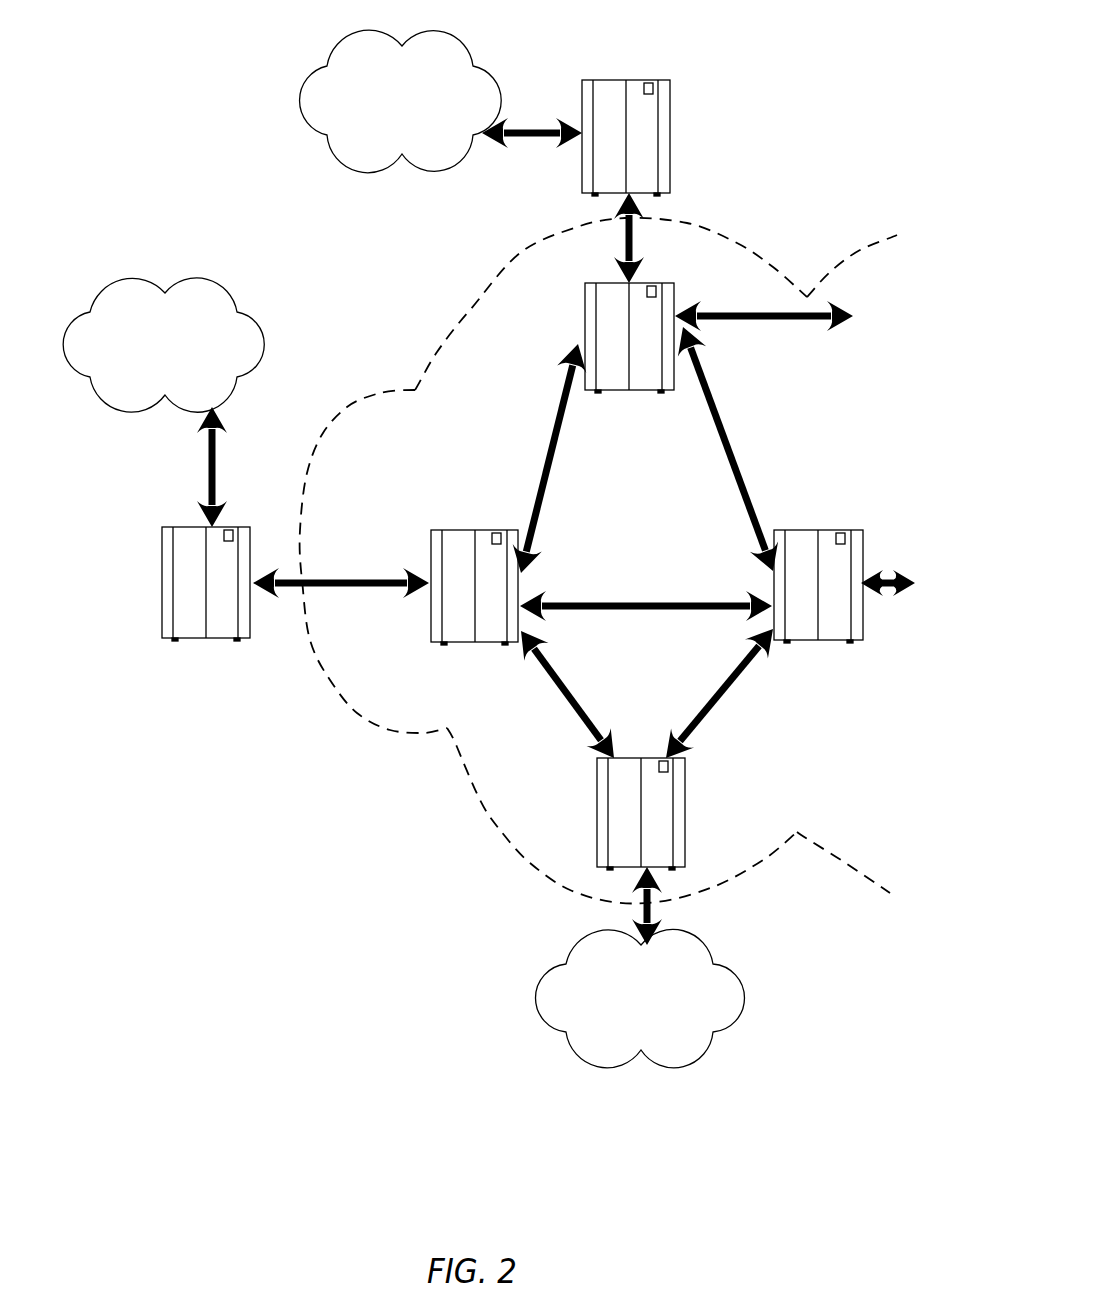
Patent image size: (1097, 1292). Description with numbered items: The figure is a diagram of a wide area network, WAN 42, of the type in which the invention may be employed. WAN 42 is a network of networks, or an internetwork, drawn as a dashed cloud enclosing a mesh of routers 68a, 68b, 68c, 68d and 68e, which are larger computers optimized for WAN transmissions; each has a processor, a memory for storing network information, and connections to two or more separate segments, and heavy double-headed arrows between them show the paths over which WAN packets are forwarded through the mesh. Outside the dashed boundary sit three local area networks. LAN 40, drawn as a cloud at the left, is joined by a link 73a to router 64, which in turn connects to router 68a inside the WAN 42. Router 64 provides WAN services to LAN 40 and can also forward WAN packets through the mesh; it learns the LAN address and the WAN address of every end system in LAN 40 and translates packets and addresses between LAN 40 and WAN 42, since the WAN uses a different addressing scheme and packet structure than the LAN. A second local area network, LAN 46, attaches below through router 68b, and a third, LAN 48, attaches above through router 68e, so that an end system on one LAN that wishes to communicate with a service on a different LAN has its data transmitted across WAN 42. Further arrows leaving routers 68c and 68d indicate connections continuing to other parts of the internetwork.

The LAN 40 is at (205, 280).
The WAN 42 is at (870, 780).
The LAN2 local area network 46 is at (680, 933).
The LAN3 local area network 48 is at (440, 31).
The router 64 is at (158, 548).
The router 68a is at (428, 550).
The router 68b is at (597, 776).
The router 68c is at (772, 600).
The router 68d is at (583, 303).
The router 68e is at (580, 100).
The communication link 73a is at (216, 478).